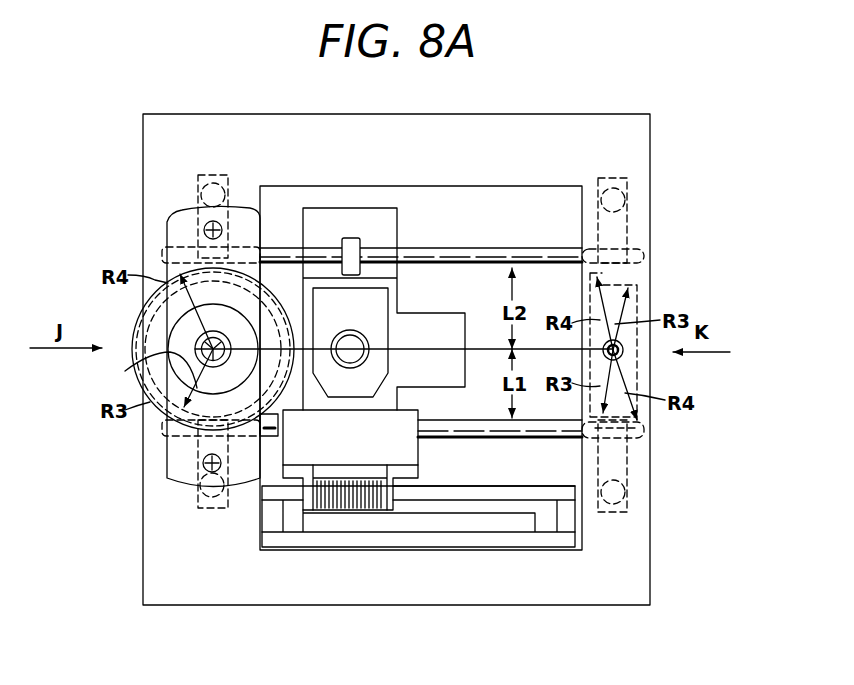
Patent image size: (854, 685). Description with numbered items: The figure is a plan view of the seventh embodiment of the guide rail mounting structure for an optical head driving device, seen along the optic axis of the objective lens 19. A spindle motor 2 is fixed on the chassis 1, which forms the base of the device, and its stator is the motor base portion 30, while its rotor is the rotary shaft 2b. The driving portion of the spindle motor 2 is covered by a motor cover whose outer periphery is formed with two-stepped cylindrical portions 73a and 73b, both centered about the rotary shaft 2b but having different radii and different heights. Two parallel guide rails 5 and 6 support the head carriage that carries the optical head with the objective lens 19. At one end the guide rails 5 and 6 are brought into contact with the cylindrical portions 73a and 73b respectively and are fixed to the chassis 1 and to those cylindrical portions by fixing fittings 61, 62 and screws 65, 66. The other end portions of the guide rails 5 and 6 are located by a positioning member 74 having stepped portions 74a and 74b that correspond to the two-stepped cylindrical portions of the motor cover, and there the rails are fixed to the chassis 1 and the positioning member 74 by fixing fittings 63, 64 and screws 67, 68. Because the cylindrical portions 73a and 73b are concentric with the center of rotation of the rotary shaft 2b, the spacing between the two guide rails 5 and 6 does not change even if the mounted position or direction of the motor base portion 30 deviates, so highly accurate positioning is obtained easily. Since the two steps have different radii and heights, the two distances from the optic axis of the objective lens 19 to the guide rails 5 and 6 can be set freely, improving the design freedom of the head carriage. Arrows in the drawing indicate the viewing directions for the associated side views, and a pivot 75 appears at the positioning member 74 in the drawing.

The chassis 1 is at (313, 592).
The spindle motor 2 is at (357, 445).
The rotary shaft 2b is at (150, 366).
The guide rail 5 is at (463, 425).
The guide rail 6 is at (448, 256).
The objective lens 19 is at (366, 349).
The motor base portion 30 is at (181, 222).
The fixing fitting 61 is at (198, 505).
The fixing fitting 62 is at (208, 184).
The fixing fitting 63 is at (612, 514).
The fixing fitting 64 is at (609, 176).
The screw 65 is at (213, 500).
The screw 66 is at (222, 183).
The screw 67 is at (626, 497).
The screw 68 is at (627, 200).
The cylindrical portion 73a is at (158, 428).
The cylindrical portion 73b is at (141, 313).
The positioning member 74 is at (640, 302).
The stepped portion 74a is at (645, 259).
The stepped portion 74b is at (645, 434).
The lever pivot pin 75 is at (625, 352).